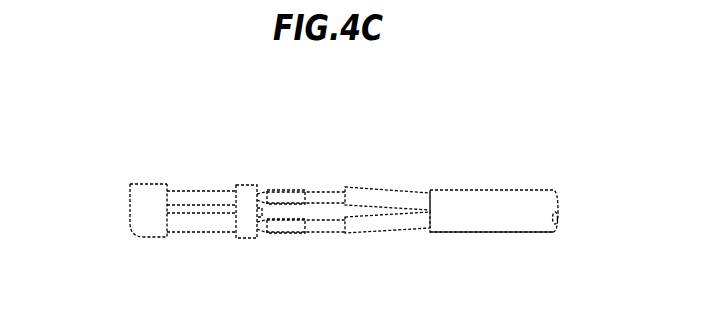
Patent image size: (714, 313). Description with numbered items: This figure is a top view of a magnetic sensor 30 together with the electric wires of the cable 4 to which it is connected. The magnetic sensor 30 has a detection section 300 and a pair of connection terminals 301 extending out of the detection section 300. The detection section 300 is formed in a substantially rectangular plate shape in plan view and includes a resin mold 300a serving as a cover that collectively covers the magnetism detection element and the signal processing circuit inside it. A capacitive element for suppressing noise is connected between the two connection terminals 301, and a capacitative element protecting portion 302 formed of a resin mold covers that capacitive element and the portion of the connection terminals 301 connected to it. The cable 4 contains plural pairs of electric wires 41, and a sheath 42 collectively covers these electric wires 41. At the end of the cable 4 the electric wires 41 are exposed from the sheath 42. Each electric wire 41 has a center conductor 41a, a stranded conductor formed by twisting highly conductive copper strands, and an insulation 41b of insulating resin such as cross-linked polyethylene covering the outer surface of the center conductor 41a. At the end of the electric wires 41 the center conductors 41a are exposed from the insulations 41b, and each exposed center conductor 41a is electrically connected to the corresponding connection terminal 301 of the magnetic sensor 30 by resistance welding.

The magnetic sensor 30 is at (200, 155).
The detection section 300 is at (143, 218).
The resin mold 300a is at (147, 195).
The connection terminal 301 is at (202, 205).
The capacitative element protecting portion 302 is at (243, 222).
The electric wire 41 is at (362, 222).
The center conductor 41a is at (330, 195).
The insulation 41b is at (402, 200).
The cable 4 is at (507, 190).
The sheath 42 is at (527, 222).